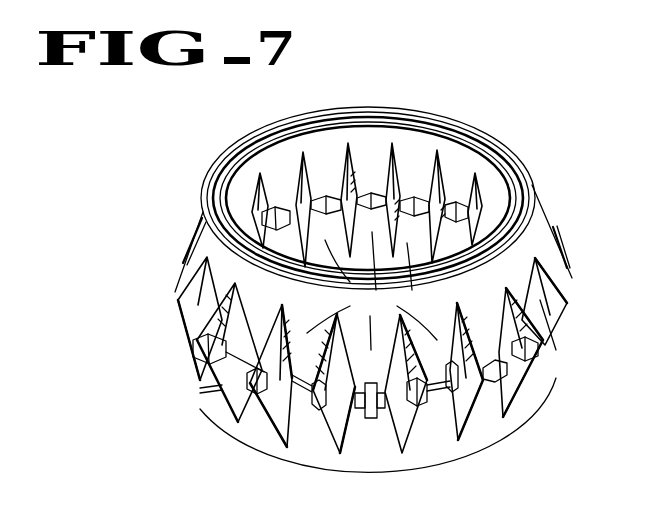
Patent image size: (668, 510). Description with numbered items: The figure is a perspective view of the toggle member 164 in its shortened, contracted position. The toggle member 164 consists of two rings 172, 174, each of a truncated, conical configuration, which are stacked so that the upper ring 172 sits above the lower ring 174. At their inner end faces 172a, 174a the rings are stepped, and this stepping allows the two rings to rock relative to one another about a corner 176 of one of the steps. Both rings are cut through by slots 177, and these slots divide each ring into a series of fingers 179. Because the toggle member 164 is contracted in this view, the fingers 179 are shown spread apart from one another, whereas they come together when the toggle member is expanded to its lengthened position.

The toggle member 164 is at (549, 155).
The ring 172 is at (533, 232).
The inner end face 172a is at (205, 350).
The ring 174 is at (523, 397).
The inner end face 174a is at (317, 200).
The corner 176 is at (303, 400).
The slot 177 is at (393, 170).
The fingers 179 is at (530, 440).